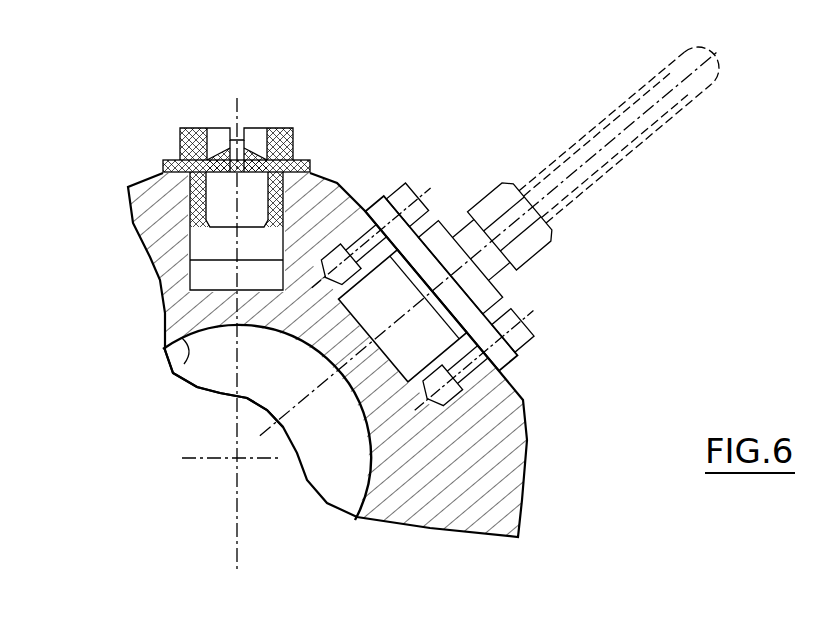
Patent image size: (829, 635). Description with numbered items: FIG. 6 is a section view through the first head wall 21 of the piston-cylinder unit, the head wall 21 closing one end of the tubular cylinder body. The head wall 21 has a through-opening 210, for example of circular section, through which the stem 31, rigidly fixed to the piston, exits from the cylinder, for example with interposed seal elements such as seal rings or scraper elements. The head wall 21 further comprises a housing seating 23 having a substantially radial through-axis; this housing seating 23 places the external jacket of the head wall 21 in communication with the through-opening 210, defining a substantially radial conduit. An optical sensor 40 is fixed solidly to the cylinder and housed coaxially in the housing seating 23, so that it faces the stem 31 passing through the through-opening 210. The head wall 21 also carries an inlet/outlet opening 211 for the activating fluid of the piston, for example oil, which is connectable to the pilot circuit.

The head wall 21 is at (467, 465).
The housing seating 23 is at (358, 375).
The stem 31 is at (335, 400).
The optical sensor 40 is at (248, 398).
The through-opening 210 is at (182, 352).
The inlet/outlet opening 211 is at (248, 187).